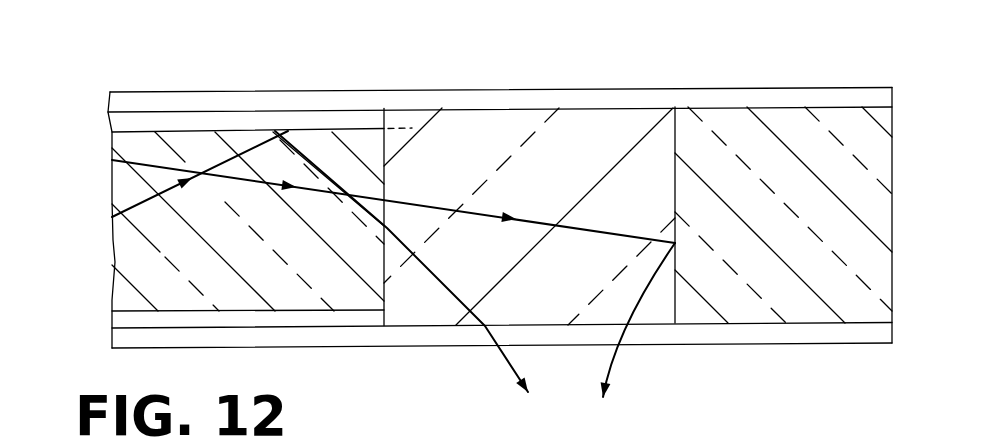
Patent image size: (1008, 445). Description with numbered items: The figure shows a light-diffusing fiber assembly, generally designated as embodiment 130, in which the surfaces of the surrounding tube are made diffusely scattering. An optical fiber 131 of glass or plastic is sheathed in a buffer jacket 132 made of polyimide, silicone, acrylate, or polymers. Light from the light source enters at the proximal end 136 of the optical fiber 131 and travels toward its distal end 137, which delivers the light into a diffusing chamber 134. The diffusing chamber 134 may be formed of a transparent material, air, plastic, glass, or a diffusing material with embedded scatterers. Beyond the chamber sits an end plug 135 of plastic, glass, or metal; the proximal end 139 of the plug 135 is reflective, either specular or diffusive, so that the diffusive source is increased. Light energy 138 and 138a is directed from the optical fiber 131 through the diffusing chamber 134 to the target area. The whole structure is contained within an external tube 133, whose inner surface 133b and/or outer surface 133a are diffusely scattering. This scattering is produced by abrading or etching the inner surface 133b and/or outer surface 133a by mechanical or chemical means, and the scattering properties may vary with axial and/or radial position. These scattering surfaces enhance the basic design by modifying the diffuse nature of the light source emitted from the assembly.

The embodiment 130 is at (260, 42).
The optical fiber 131 is at (130, 260).
The buffer jacket 132 is at (110, 113).
The external tube 133 is at (345, 90).
The outer surface 133a is at (472, 90).
The inner surface 133b is at (569, 108).
The diffusing chamber 134 is at (582, 185).
The end plug 135 is at (788, 123).
The proximal end 136 is at (112, 215).
The distal end 137 is at (385, 290).
The light energy 138 is at (618, 362).
The light energy 138a is at (514, 366).
The proximal end of the plug 139 is at (674, 143).